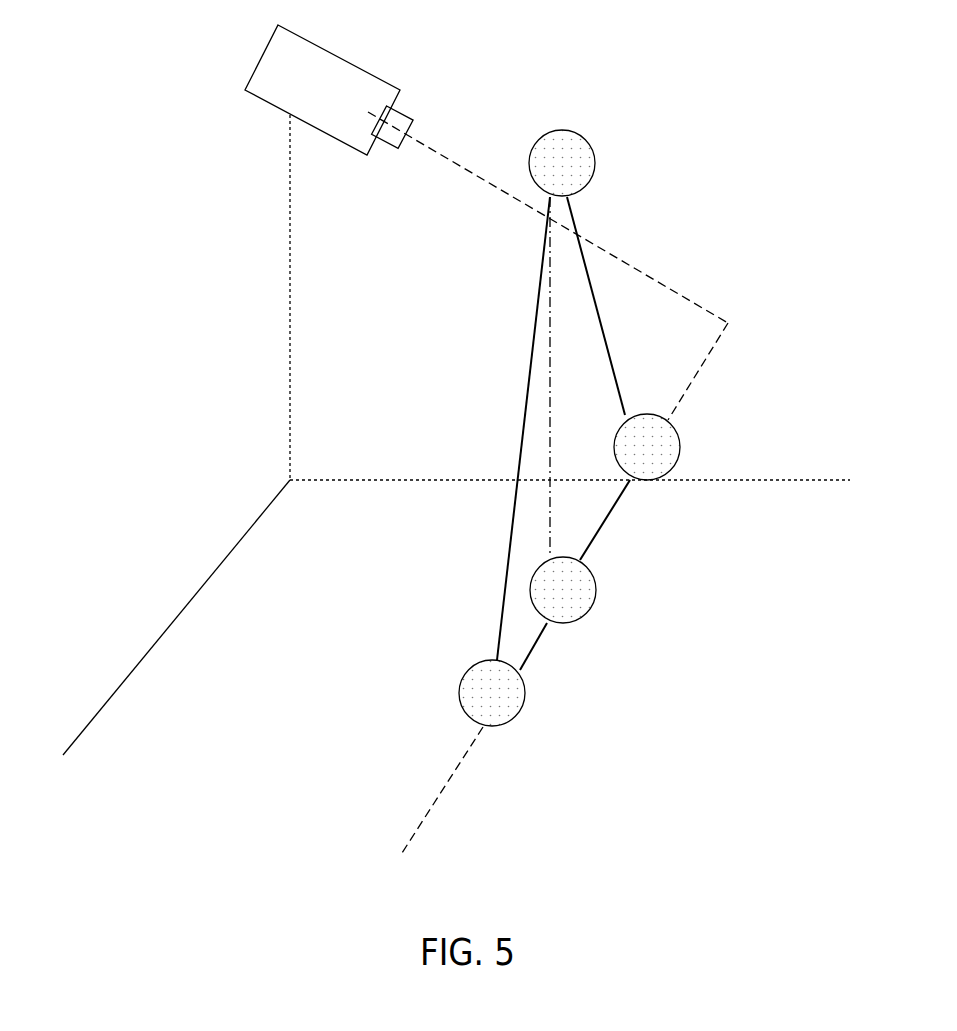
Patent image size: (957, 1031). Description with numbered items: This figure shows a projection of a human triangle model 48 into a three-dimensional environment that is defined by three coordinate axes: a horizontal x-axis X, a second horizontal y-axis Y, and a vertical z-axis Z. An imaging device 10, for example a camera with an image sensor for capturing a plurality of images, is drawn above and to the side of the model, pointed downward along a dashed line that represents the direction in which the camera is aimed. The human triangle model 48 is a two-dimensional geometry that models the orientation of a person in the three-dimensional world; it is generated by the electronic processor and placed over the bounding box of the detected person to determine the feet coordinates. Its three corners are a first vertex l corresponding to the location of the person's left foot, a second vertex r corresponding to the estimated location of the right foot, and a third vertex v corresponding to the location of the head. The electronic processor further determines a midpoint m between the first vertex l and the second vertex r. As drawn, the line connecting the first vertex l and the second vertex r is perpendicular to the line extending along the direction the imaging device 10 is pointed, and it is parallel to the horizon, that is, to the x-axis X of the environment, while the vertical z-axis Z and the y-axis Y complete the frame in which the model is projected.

The imaging device 10 is at (261, 58).
The human triangle model 48 is at (510, 551).
The third vertex v is at (575, 163).
The second vertex r is at (654, 447).
The midpoint m is at (575, 591).
The first vertex l is at (497, 693).
The x-axis X is at (168, 633).
The y-axis Y is at (583, 481).
The z-axis Z is at (273, 297).